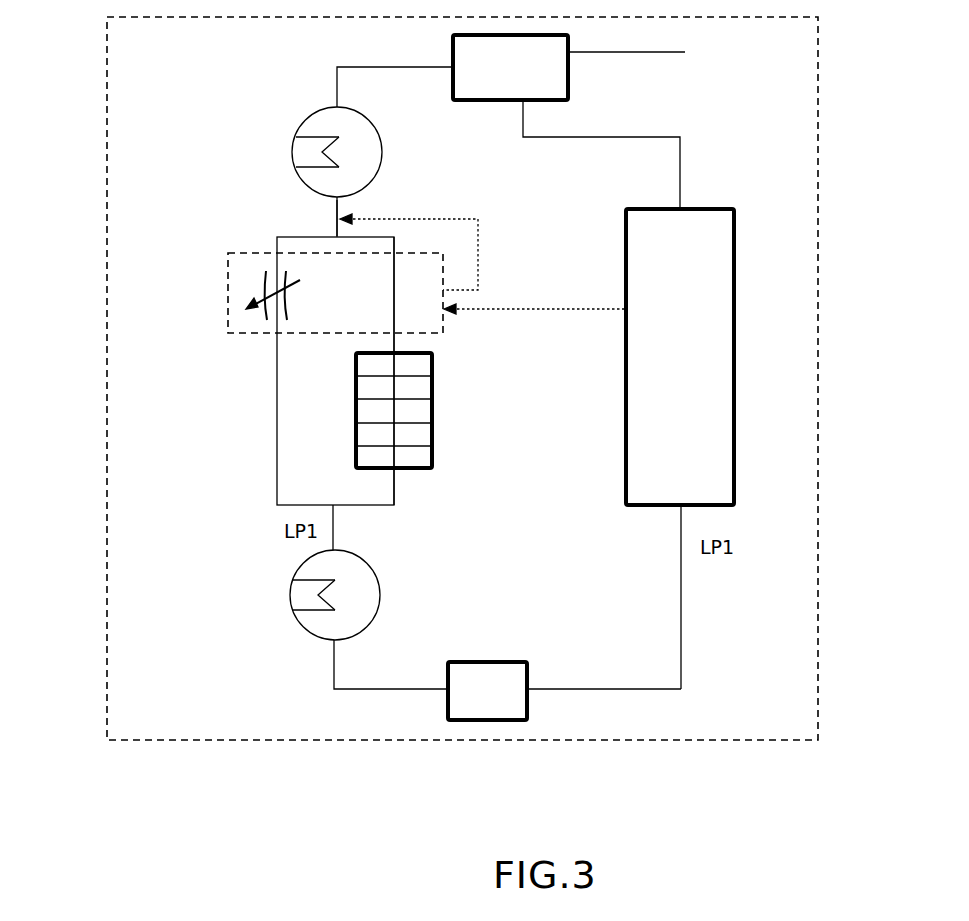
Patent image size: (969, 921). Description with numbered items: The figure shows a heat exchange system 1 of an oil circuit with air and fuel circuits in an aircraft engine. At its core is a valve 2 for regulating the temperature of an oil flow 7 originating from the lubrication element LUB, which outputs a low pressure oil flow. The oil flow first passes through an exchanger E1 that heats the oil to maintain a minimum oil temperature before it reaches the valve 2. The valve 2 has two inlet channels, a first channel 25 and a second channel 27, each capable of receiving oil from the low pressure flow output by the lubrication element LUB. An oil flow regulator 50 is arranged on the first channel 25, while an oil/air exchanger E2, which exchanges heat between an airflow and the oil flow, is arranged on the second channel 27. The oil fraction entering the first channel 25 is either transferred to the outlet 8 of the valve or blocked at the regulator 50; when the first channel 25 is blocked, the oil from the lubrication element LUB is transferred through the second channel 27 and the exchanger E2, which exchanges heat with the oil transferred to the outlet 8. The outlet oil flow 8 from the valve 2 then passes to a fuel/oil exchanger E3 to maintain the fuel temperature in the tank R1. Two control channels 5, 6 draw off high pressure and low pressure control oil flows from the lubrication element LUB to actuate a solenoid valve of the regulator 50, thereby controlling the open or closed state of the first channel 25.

The heat exchange system 1 is at (100, 49).
The valve 2 is at (214, 432).
The control channel 5 is at (538, 308).
The control channel 6 is at (452, 219).
The oil flow 7 is at (333, 688).
The outlet 8 is at (336, 214).
The first channel 25 is at (272, 486).
The second channel 27 is at (397, 494).
The oil flow regulator 50 is at (264, 312).
The exchanger E1 is at (298, 630).
The oil/air exchanger E2 is at (437, 410).
The fuel/oil exchanger E3 is at (298, 170).
The tank R1 is at (510, 67).
The lubrication element LUB is at (680, 357).